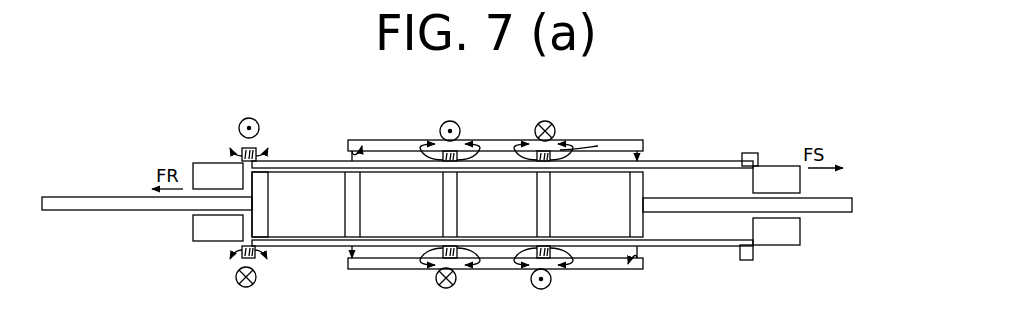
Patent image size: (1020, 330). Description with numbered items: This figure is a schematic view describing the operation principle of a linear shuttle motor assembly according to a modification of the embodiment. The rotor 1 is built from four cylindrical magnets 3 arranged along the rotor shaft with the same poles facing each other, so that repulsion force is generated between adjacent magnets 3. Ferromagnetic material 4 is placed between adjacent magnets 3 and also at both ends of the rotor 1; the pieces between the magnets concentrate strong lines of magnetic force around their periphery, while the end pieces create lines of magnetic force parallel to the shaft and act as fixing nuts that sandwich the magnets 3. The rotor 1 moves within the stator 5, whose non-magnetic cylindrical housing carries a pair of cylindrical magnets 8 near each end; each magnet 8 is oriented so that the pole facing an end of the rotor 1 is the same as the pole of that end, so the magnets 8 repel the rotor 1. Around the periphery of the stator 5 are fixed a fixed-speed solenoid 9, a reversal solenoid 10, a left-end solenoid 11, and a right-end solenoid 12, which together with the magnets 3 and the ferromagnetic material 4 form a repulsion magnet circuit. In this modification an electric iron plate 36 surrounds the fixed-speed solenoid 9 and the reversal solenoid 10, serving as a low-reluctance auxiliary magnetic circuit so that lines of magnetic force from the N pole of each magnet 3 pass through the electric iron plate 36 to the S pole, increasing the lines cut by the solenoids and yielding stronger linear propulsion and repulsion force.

The rotor 1 is at (641, 224).
The cylindrical magnets 3 is at (400, 183).
The ferromagnetic material 4 is at (262, 225).
The stator 5 is at (638, 247).
The cylindrical magnets 8 is at (215, 163).
The fixed-speed solenoid 9 is at (490, 140).
The reversal solenoid 10 is at (440, 157).
The left-end solenoid 11 is at (256, 150).
The right-end solenoid 12 is at (752, 153).
The electric iron plate 36 is at (592, 148).